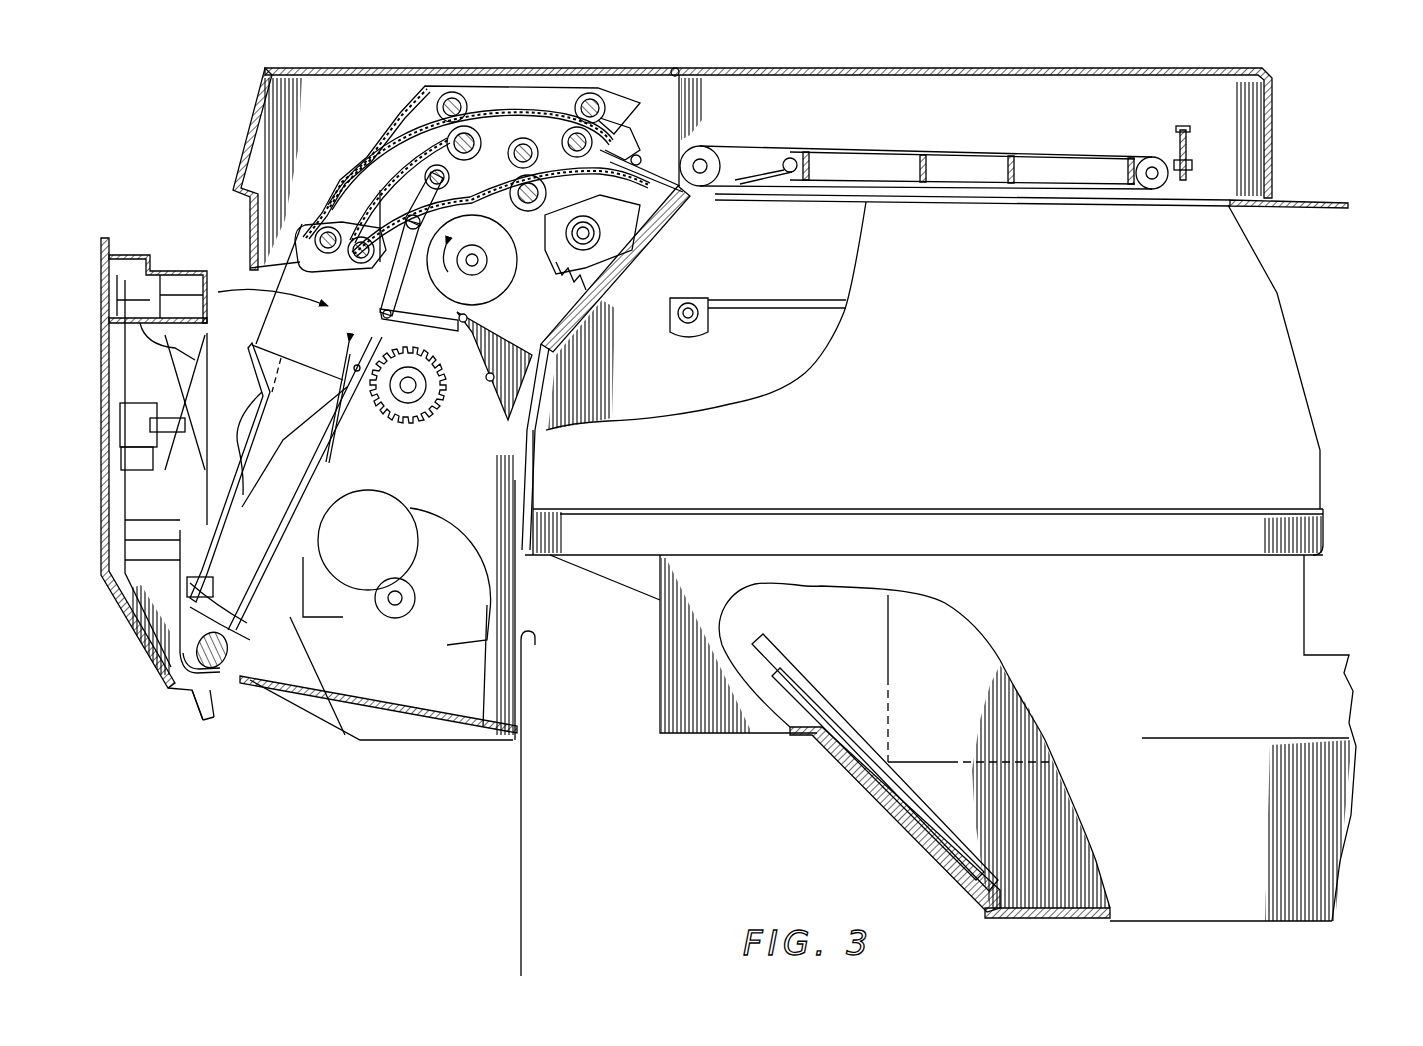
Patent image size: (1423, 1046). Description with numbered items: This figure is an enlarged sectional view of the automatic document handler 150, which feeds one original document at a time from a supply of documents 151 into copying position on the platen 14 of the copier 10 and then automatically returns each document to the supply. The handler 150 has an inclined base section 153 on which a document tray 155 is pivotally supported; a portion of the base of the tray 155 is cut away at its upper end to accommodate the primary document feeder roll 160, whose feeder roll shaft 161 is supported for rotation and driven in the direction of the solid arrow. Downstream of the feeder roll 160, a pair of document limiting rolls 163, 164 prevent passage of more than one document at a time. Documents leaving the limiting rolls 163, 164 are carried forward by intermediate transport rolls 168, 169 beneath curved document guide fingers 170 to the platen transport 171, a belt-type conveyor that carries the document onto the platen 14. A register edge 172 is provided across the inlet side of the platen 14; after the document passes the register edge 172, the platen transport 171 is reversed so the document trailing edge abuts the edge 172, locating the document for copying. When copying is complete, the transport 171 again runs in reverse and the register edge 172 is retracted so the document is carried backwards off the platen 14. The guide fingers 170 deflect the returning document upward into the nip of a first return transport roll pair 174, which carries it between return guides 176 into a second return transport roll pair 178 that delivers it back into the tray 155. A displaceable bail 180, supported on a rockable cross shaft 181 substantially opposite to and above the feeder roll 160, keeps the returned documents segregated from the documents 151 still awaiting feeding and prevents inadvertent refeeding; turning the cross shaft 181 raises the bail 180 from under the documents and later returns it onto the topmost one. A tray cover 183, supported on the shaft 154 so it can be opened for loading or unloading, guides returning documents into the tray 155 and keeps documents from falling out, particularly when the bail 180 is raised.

The copier 10 is at (1302, 160).
The platen 14 is at (1036, 200).
The automatic document handler 150 is at (238, 105).
The documents 151 is at (336, 378).
The inclined base section 153 is at (295, 578).
The shaft 154 is at (224, 690).
The document tray 155 is at (266, 528).
The primary document feeder roll 160 is at (421, 416).
The feeder roll shaft 161 is at (416, 386).
The document limiting roll 163 is at (440, 240).
The document limiting roll 164 is at (488, 282).
The intermediate transport roll 168 is at (523, 138).
The intermediate transport roll 169 is at (548, 184).
The curved document guide fingers 170 is at (667, 158).
The platen transport 171 is at (762, 150).
The register edge 172 is at (717, 192).
The first return transport roll pair 174 is at (620, 96).
The return guides 176 is at (490, 100).
The second return transport roll pair 178 is at (445, 90).
The bail 180 is at (357, 362).
The rockable cross shaft 181 is at (384, 311).
The tray cover 183 is at (122, 628).